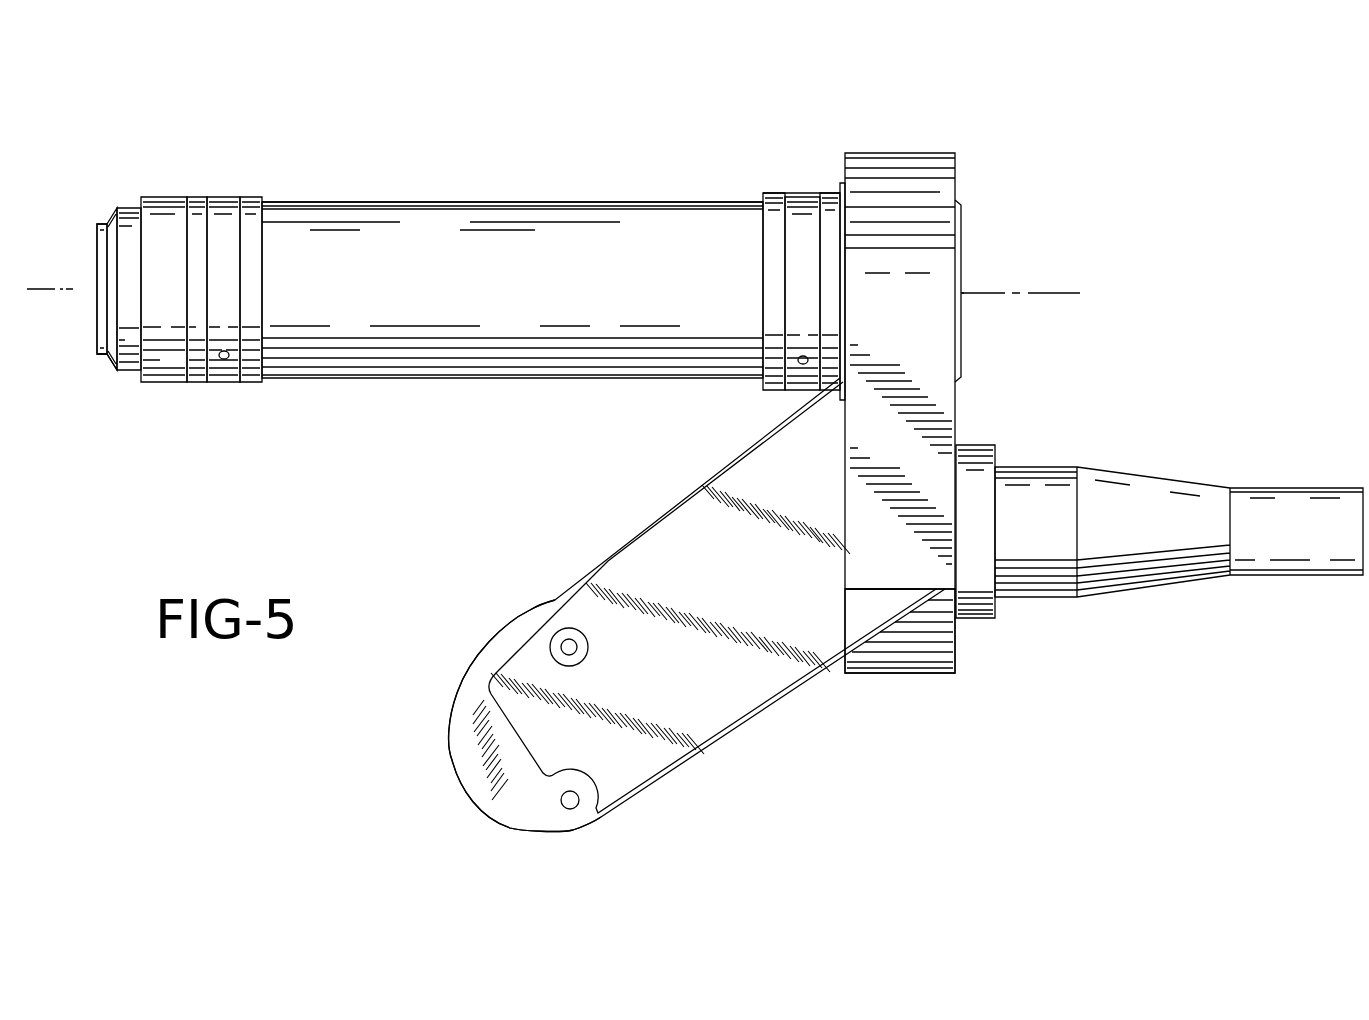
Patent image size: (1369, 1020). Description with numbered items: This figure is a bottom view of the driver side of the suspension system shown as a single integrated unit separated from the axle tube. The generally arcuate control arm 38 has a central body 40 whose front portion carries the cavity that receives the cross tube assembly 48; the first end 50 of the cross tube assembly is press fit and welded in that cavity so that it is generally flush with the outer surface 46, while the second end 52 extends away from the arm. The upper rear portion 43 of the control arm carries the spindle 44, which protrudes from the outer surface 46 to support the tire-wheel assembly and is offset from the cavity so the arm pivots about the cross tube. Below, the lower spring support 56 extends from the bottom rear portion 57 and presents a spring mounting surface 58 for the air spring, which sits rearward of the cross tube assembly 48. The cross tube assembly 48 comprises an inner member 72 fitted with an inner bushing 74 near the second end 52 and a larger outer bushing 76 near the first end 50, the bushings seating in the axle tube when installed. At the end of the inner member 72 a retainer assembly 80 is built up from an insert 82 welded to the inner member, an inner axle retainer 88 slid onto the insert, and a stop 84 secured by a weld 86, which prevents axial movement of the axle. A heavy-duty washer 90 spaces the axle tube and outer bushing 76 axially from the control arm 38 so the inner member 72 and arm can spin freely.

The control arm 38 is at (927, 150).
The central body 40 is at (885, 187).
The upper rear portion 43 is at (937, 676).
The spindle 44 is at (1160, 482).
The outer surface 46 is at (958, 410).
The cross tube assembly 48 is at (453, 197).
The first end 50 is at (843, 306).
The second end 52 is at (85, 227).
The lower spring support 56 is at (682, 545).
The bottom rear portion 57 is at (878, 592).
The spring mounting surface 58 is at (462, 722).
The inner member 72 is at (397, 232).
The inner bushing 74 is at (216, 212).
The outer bushing 76 is at (805, 207).
The retainer assembly 80 is at (97, 362).
The insert 82 is at (97, 243).
The stop 84 is at (122, 372).
The weld 86 is at (116, 217).
The inner axle retainer 88 is at (158, 212).
The washer 90 is at (845, 280).